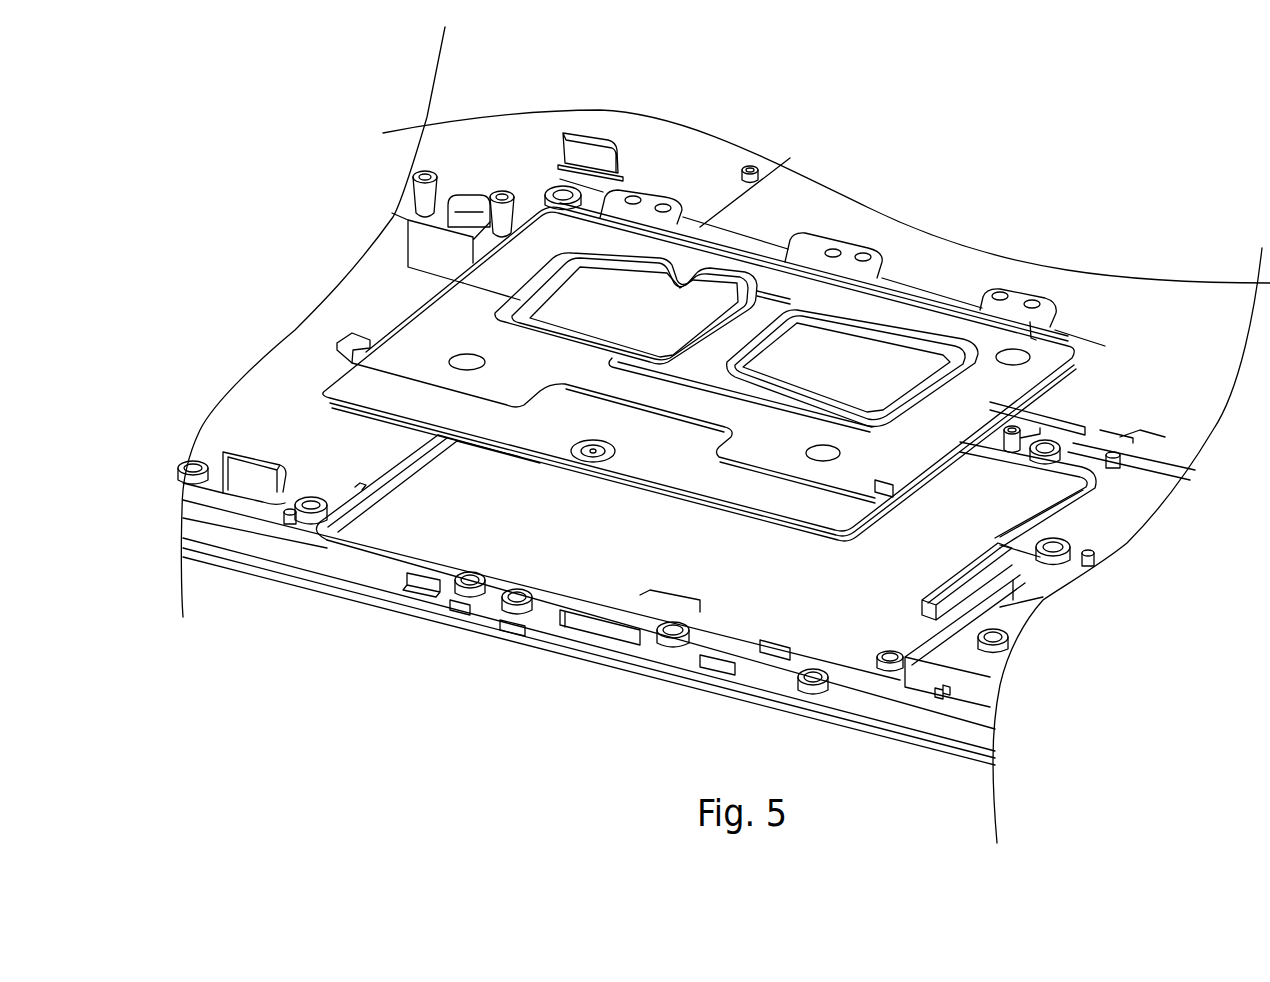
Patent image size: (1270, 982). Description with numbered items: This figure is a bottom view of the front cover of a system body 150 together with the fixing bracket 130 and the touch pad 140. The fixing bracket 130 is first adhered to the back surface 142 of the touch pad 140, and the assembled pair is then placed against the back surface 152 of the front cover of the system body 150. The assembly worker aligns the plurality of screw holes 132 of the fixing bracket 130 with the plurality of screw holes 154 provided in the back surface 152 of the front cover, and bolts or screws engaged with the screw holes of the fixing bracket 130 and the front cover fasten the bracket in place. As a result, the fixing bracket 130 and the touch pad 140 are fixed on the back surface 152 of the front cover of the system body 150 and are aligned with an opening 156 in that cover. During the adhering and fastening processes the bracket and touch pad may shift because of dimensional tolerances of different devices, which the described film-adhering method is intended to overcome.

The fixing bracket 130 is at (453, 313).
The screw holes of the fixing bracket 132 is at (997, 283).
The touch pad 140 is at (322, 402).
The back surface of the touch pad 142 is at (353, 390).
The system body 150 is at (438, 653).
The back surface of the front cover of the system body 152 is at (1120, 527).
The screw holes of the back surface of the front cover 154 is at (1022, 415).
The opening 156 is at (450, 518).